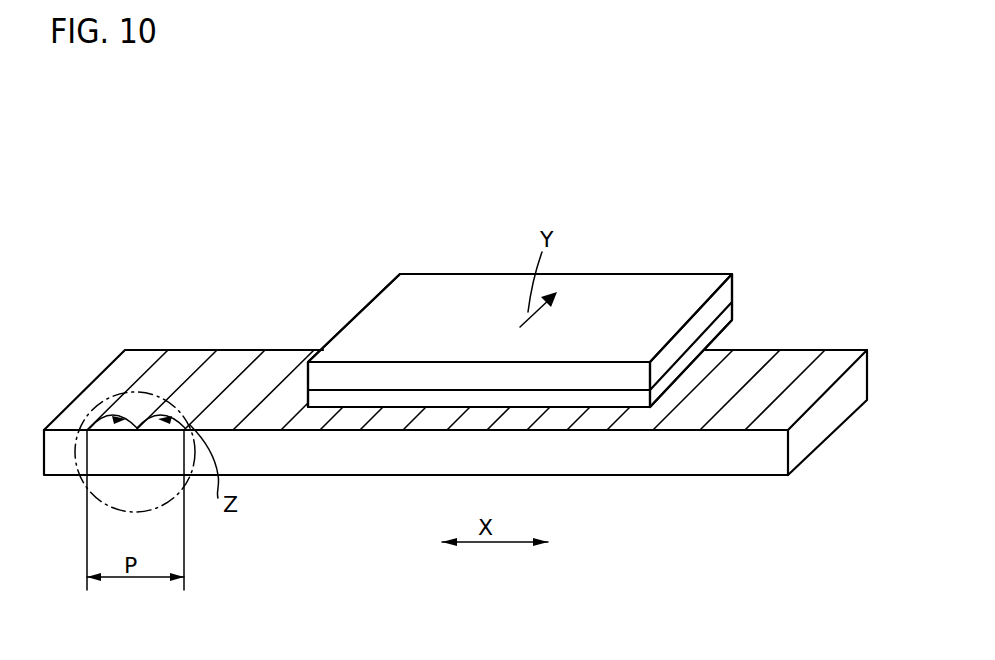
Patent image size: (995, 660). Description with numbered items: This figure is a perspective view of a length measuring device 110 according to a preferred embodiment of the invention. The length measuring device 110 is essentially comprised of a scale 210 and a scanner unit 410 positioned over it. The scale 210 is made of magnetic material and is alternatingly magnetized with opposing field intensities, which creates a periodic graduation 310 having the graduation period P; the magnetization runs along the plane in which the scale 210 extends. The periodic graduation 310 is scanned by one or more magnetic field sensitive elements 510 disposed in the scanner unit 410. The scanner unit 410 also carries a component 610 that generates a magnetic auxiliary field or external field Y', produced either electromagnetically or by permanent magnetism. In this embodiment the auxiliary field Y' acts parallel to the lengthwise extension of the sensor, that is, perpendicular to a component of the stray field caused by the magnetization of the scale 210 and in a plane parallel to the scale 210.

The length measuring device 110 is at (544, 317).
The scale 210 is at (737, 463).
The periodic graduation 310 is at (797, 377).
The scanner unit 410 is at (659, 314).
The magnetic field sensitive elements 510 is at (728, 324).
The component generating a magnetic auxiliary field 610 is at (460, 287).